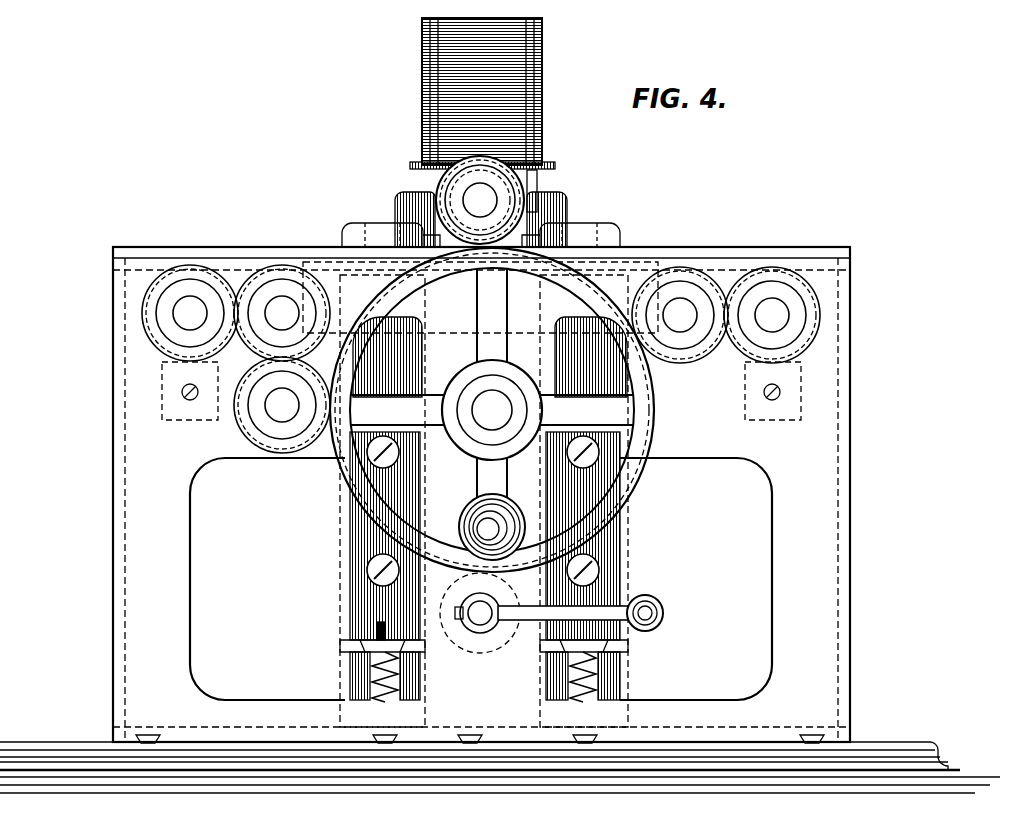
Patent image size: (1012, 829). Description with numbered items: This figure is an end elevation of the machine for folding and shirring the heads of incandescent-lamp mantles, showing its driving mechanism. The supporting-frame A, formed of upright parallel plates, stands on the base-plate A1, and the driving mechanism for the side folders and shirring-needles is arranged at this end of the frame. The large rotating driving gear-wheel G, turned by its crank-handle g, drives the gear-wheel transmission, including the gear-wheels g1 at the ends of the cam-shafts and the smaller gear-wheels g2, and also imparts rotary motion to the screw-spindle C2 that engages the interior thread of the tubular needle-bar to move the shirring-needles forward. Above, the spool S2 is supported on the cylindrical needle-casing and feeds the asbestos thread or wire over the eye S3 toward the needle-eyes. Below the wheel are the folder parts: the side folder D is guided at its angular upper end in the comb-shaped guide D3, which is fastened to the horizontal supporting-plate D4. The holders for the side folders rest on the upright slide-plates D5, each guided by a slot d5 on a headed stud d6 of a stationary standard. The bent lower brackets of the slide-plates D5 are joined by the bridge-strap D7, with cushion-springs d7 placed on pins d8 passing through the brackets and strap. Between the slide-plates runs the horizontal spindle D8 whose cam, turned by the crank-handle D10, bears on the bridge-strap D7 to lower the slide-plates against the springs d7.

The supporting-frame A is at (481, 494).
The base-plate A1 is at (500, 752).
The spool S2 is at (487, 93).
The eye S3 is at (538, 195).
The screw-spindle C2 is at (480, 200).
The side folder D is at (396, 198).
The comb-shaped guide D3 is at (344, 233).
The horizontal supporting-plate D4 is at (568, 202).
The upright slide-plate D5 is at (350, 528).
The bridge-strap D7 is at (340, 644).
The horizontal spindle D8 is at (482, 625).
The crank-handle D10 is at (664, 613).
The slot d5 is at (378, 626).
The headed stud d6 is at (400, 455).
The cushion-spring d7 is at (395, 704).
The pin d8 is at (598, 676).
The driving gear-wheel G is at (478, 325).
The crank-handle g is at (470, 507).
The gear-wheel g1 is at (330, 346).
The roller g2 is at (168, 346).